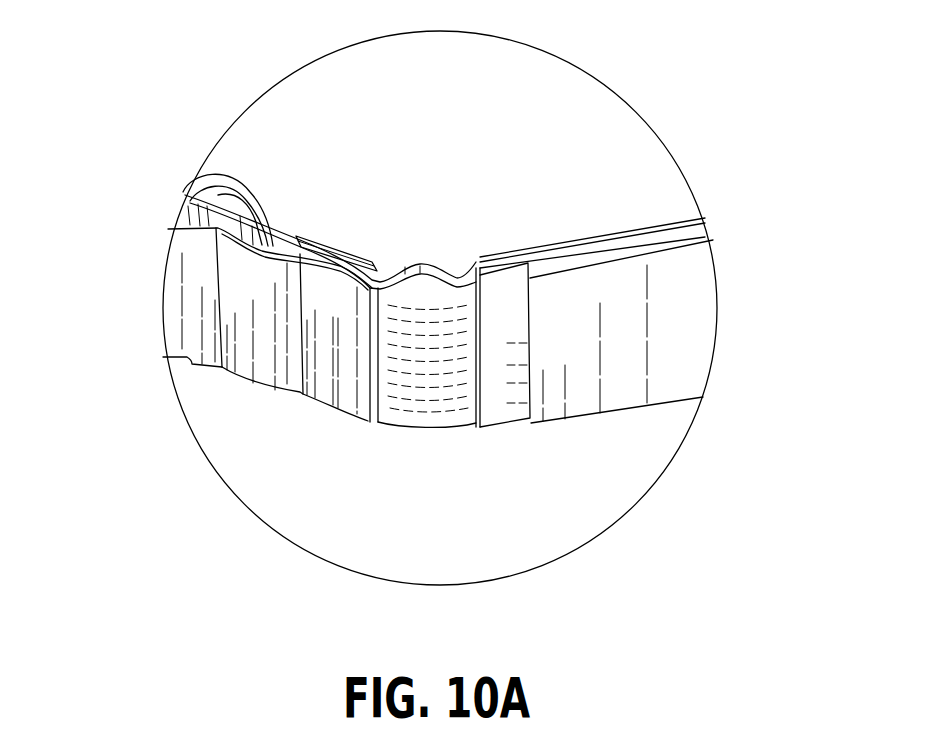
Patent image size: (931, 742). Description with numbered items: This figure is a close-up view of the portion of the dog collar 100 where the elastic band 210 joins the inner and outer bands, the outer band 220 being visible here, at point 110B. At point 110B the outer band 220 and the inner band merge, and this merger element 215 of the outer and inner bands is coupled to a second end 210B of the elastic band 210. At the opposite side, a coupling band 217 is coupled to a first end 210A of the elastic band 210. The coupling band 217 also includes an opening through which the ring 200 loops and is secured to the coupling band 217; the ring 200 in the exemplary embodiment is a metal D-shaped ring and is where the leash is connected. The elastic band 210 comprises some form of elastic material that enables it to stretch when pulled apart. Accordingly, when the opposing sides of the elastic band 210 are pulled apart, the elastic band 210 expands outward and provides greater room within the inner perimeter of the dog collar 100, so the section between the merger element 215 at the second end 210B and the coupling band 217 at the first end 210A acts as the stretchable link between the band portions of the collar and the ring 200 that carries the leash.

The dog collar 100 is at (295, 158).
The point where inner and outer bands merge 110B is at (618, 190).
The ring 200 is at (228, 197).
The elastic band 210 is at (403, 413).
The first end of the elastic band 210A is at (340, 252).
The second end of the elastic band 210B is at (470, 330).
The merger element 215 is at (508, 415).
The coupling band 217 is at (145, 460).
The outer band 220 is at (175, 307).